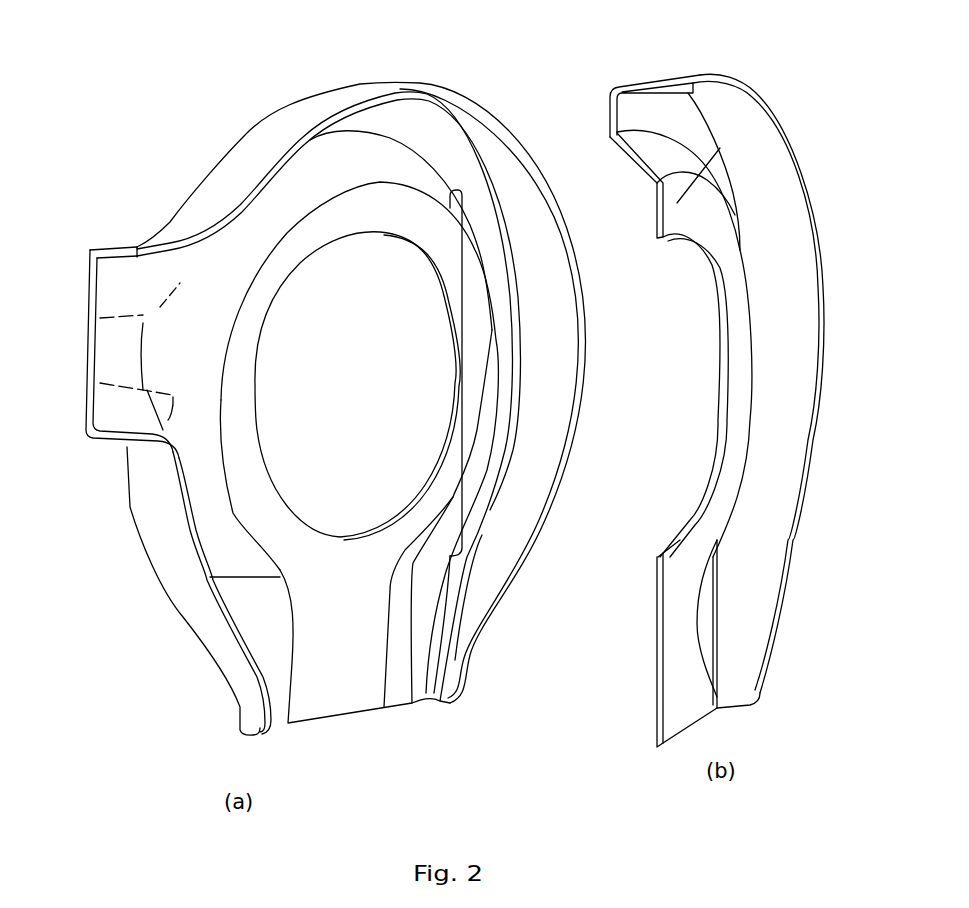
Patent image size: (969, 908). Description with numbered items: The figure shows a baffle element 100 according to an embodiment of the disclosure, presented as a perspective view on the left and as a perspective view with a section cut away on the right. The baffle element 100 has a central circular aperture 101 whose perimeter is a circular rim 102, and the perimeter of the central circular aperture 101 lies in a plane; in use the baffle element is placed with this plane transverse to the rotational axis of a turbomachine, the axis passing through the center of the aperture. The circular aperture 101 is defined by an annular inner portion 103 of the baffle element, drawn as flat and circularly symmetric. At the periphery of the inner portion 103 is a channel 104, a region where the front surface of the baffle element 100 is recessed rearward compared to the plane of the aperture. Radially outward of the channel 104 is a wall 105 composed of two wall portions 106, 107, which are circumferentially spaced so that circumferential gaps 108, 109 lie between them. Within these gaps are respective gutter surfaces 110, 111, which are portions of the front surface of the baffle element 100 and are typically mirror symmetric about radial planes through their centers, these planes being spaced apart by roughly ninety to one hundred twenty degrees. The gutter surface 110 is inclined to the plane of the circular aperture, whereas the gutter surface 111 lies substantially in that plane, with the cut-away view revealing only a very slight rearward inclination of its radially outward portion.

The baffle element 100 is at (195, 114).
The central circular aperture 101 is at (345, 293).
The circular rim 102 is at (405, 250).
The annular inner portion 103 is at (465, 372).
The channel 104 is at (632, 112).
The wall 105 is at (510, 121).
The wall portion 106 is at (345, 96).
The wall portion 107 is at (170, 503).
The circumferential gap 108 is at (88, 255).
The circumferential gap 109 is at (445, 742).
The gutter surface 110 is at (110, 370).
The gutter surface 111 is at (363, 628).